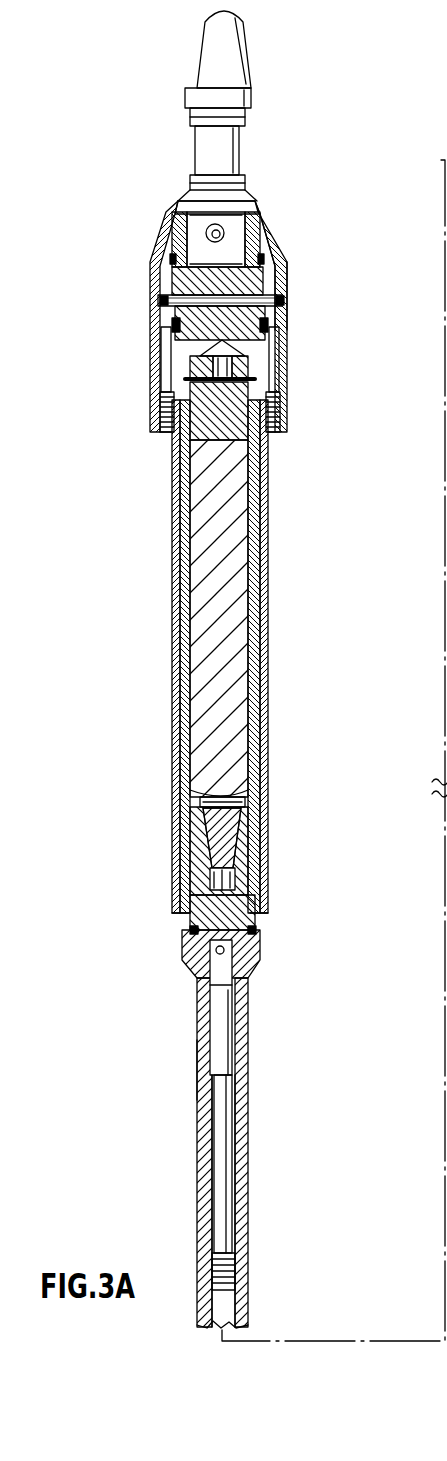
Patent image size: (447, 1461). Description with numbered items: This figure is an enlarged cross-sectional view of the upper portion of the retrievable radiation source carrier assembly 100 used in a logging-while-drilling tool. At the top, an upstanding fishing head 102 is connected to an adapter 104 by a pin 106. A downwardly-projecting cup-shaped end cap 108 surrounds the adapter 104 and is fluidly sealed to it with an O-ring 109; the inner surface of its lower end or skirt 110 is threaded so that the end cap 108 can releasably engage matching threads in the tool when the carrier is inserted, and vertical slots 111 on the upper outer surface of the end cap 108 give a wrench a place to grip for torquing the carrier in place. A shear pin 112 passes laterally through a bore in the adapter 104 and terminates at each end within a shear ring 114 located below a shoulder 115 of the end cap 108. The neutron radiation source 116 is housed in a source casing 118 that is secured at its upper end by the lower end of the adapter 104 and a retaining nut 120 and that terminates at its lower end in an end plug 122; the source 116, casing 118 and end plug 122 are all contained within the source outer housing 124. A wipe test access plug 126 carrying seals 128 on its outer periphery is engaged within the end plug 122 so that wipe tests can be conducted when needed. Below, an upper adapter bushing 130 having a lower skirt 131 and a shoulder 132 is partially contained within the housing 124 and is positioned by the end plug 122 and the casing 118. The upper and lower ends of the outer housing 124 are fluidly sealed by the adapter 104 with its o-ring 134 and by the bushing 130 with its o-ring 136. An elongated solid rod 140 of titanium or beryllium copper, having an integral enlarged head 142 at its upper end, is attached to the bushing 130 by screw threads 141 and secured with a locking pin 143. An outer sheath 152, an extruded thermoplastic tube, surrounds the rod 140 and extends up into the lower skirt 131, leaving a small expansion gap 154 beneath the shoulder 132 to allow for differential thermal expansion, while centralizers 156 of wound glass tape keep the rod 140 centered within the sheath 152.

The retrievable radiation source carrier assembly 100 is at (152, 640).
The fishing head 102 is at (238, 33).
The adapter 104 is at (265, 220).
The pin 106 is at (227, 226).
The end cap 108 is at (168, 235).
The O-ring 109 is at (277, 236).
The skirt 110 is at (153, 410).
The vertical slots 111 is at (283, 257).
The shear pin 112 is at (272, 298).
The shear ring 114 is at (153, 305).
The shoulder 115 is at (153, 265).
The neutron radiation source 116 is at (215, 622).
The source casing 118 is at (266, 702).
The retaining nut 120 is at (258, 357).
The end plug 122 is at (240, 808).
The source outer housing 124 is at (268, 450).
The wipe test access plug 126 is at (234, 832).
The seals 128 is at (250, 858).
The upper adapter bushing 130 is at (255, 915).
The lower skirt 131 is at (198, 1060).
The shoulder 132 is at (198, 1015).
The o-ring 134 is at (286, 322).
The o-ring 136 is at (190, 930).
The solid rod 140 is at (232, 1100).
The screw threads 141 is at (185, 968).
The enlarged head 142 is at (240, 1055).
The locking pin 143 is at (226, 950).
The outer sheath 152 is at (248, 1140).
The expansion gap 154 is at (235, 1030).
The centralizers 156 is at (235, 1262).